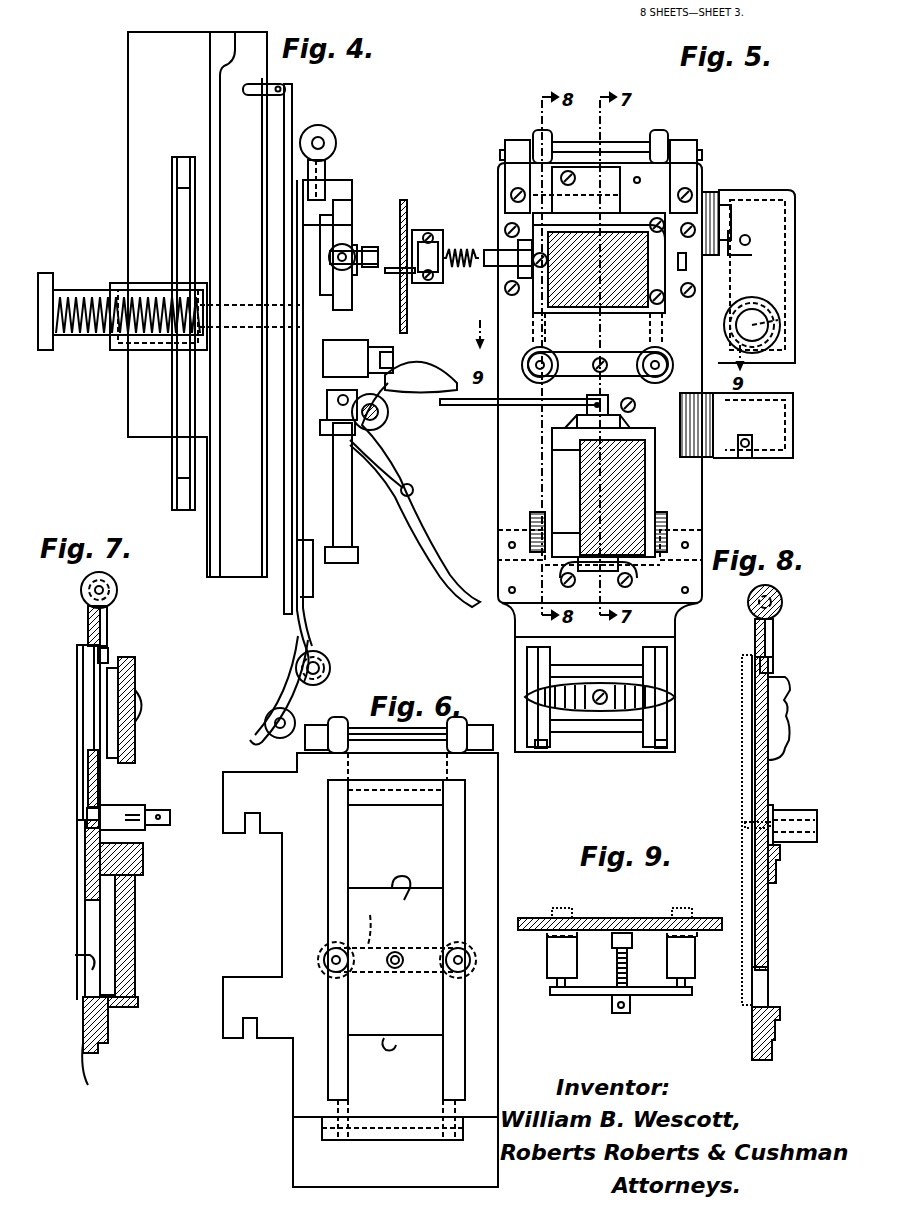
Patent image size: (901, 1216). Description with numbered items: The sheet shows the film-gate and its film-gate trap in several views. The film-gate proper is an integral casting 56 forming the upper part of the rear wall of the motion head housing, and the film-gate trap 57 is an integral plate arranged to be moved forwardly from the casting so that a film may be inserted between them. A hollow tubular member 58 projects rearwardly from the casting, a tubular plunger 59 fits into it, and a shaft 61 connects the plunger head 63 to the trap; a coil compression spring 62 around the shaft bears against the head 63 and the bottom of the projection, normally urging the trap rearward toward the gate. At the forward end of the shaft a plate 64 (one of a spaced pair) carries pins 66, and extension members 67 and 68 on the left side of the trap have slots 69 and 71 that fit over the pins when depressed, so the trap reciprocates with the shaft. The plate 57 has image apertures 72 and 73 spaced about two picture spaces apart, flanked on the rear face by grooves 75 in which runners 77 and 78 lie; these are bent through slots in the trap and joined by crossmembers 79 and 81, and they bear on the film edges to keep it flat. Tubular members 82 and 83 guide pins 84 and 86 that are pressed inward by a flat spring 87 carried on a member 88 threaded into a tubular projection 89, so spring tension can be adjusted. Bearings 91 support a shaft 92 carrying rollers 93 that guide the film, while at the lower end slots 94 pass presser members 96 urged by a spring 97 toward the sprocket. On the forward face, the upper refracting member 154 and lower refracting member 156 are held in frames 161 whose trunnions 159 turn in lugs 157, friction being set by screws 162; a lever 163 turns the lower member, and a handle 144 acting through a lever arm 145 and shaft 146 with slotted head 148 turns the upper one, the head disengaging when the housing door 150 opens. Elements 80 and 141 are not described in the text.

In FIG. 4, the integral casting 56 is at (220, 44).
In FIG. 4, the film-gate trap 57 is at (330, 190).
In FIG. 5, the film-gate trap 57 is at (685, 495).
In FIG. 6, the film-gate trap 57 is at (498, 780).
In FIG. 7, the film-gate trap 57 is at (85, 875).
In FIG. 8, the film-gate trap 57 is at (768, 930).
In FIG. 9, the film-gate trap 57 is at (712, 918).
In FIG. 4, the hollow tubular member 58 is at (122, 283).
In FIG. 4, the tubular plunger 59 is at (70, 288).
In FIG. 4, the shaft 61 is at (88, 335).
In FIG. 5, the shaft 61 is at (768, 318).
In FIG. 4, the coil compression spring 62 is at (100, 345).
In FIG. 4, the head 63 is at (44, 350).
In FIG. 5, the head 63 is at (765, 275).
In FIG. 5, the plate 64 is at (782, 345).
In FIG. 5, the pins 66 is at (755, 240).
In FIG. 5, the extension member 67 is at (760, 200).
In FIG. 6, the extension member 67 is at (240, 790).
In FIG. 5, the extension member 68 is at (770, 440).
In FIG. 6, the extension member 68 is at (240, 980).
In FIG. 5, the slot 69 is at (740, 230).
In FIG. 6, the slot 69 is at (255, 833).
In FIG. 5, the slot 71 is at (725, 452).
In FIG. 6, the slot 71 is at (250, 1040).
In FIG. 6, the image aperture 72 is at (395, 903).
In FIG. 7, the image aperture 72 is at (83, 675).
In FIG. 6, the image aperture 73 is at (395, 1029).
In FIG. 7, the image aperture 73 is at (75, 956).
In FIG. 6, the grooves 75 is at (328, 888).
In FIG. 5, the runner 77 is at (713, 410).
In FIG. 6, the runner 77 is at (335, 917).
In FIG. 8, the runner 77 is at (742, 770).
In FIG. 9, the runner 77 is at (682, 908).
In FIG. 4, the runner 78 is at (284, 290).
In FIG. 5, the runner 78 is at (530, 518).
In FIG. 6, the runner 78 is at (450, 1015).
In FIG. 7, the runner 78 is at (83, 773).
In FIG. 9, the runner 78 is at (562, 908).
In FIG. 5, the crossmember 79 is at (585, 218).
In FIG. 6, the crossmember 79 is at (370, 795).
In FIG. 7, the crossmember 79 is at (108, 655).
In FIG. 8, the crossmember 79 is at (775, 660).
In FIG. 5, the plate 80 is at (588, 167).
In FIG. 5, the crossmember 81 is at (552, 495).
In FIG. 6, the crossmember 81 is at (378, 1125).
In FIG. 7, the crossmember 81 is at (108, 1020).
In FIG. 8, the crossmember 81 is at (770, 995).
In FIG. 4, the tubular member 82 is at (355, 352).
In FIG. 5, the tubular member 82 is at (540, 347).
In FIG. 6, the tubular member 82 is at (348, 975).
In FIG. 8, the tubular member 82 is at (795, 810).
In FIG. 9, the tubular member 82 is at (547, 957).
In FIG. 5, the tubular member 83 is at (655, 347).
In FIG. 6, the tubular member 83 is at (448, 968).
In FIG. 7, the tubular member 83 is at (133, 805).
In FIG. 9, the tubular member 83 is at (680, 962).
In FIG. 4, the pin 84 is at (330, 372).
In FIG. 5, the pin 84 is at (532, 375).
In FIG. 6, the pin 84 is at (328, 970).
In FIG. 9, the pin 84 is at (572, 918).
In FIG. 5, the pin 86 is at (672, 362).
In FIG. 7, the pin 86 is at (84, 815).
In FIG. 8, the pin 86 is at (745, 825).
In FIG. 9, the pin 86 is at (498, 920).
In FIG. 5, the flat spring 87 is at (598, 364).
In FIG. 6, the flat spring 87 is at (379, 931).
In FIG. 7, the flat spring 87 is at (143, 805).
In FIG. 9, the flat spring 87 is at (600, 995).
In FIG. 5, the threaded member 88 is at (614, 366).
In FIG. 7, the threaded member 88 is at (140, 828).
In FIG. 9, the threaded member 88 is at (628, 980).
In FIG. 9, the tubular projection 89 is at (612, 952).
In FIG. 5, the bearings 91 is at (513, 145).
In FIG. 5, the shaft 92 is at (620, 142).
In FIG. 6, the shaft 92 is at (375, 740).
In FIG. 7, the shaft 92 is at (95, 592).
In FIG. 8, the shaft 92 is at (752, 603).
In FIG. 4, the rollers 93 is at (326, 130).
In FIG. 5, the rollers 93 is at (540, 130).
In FIG. 6, the rollers 93 is at (338, 720).
In FIG. 7, the rollers 93 is at (118, 585).
In FIG. 8, the rollers 93 is at (782, 603).
In FIG. 4, the slots 94 is at (325, 658).
In FIG. 5, the slots 94 is at (640, 662).
In FIG. 4, the presser members 96 is at (280, 738).
In FIG. 5, the presser members 96 is at (640, 748).
In FIG. 4, the spring 97 is at (282, 712).
In FIG. 5, the spring 97 is at (670, 695).
In FIG. 4, the spring 141 is at (470, 262).
In FIG. 4, the handle 144 is at (405, 275).
In FIG. 4, the lever arm 145 is at (428, 230).
In FIG. 4, the shaft 146 is at (433, 240).
In FIG. 5, the slotted head 148 is at (505, 280).
In FIG. 4, the motion head housing portion 150 is at (420, 200).
In FIG. 4, the upper refracting member 154 is at (345, 200).
In FIG. 5, the upper refracting member 154 is at (690, 195).
In FIG. 7, the upper refracting member 154 is at (137, 680).
In FIG. 4, the lower refracting member 156 is at (352, 528).
In FIG. 5, the lower refracting member 156 is at (598, 462).
In FIG. 7, the lower refracting member 156 is at (135, 938).
In FIG. 4, the lugs 157 is at (355, 250).
In FIG. 5, the lugs 157 is at (705, 220).
In FIG. 7, the lugs 157 is at (145, 712).
In FIG. 5, the trunnions 159 is at (688, 262).
In FIG. 7, the trunnions 159 is at (130, 1012).
In FIG. 5, the frame 161 is at (662, 305).
In FIG. 4, the screw 162 is at (362, 268).
In FIG. 5, the screw 162 is at (587, 418).
In FIG. 4, the lever 163 is at (352, 408).
In FIG. 5, the lever 163 is at (455, 405).